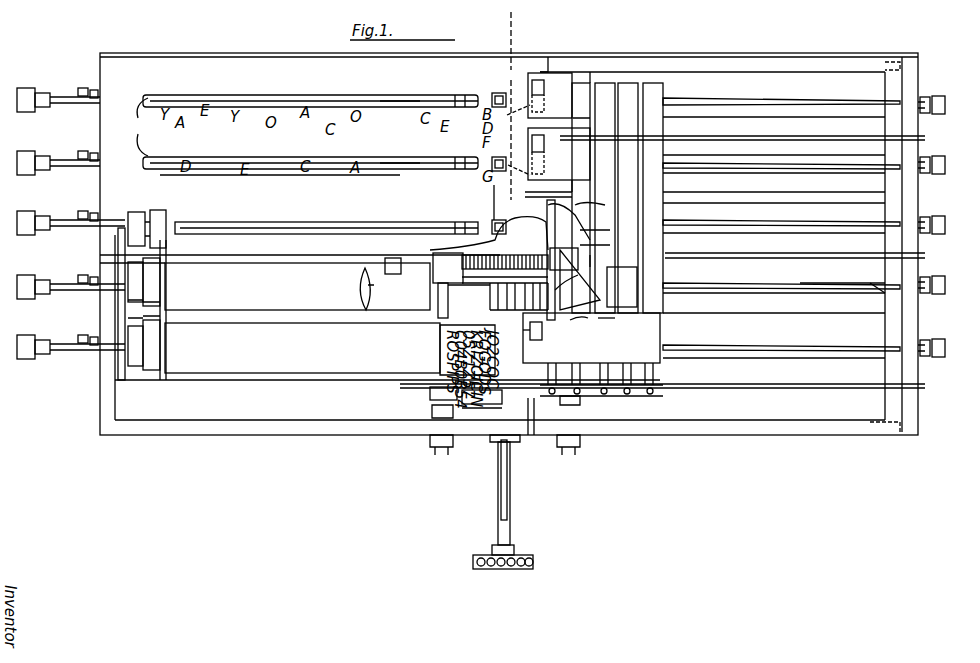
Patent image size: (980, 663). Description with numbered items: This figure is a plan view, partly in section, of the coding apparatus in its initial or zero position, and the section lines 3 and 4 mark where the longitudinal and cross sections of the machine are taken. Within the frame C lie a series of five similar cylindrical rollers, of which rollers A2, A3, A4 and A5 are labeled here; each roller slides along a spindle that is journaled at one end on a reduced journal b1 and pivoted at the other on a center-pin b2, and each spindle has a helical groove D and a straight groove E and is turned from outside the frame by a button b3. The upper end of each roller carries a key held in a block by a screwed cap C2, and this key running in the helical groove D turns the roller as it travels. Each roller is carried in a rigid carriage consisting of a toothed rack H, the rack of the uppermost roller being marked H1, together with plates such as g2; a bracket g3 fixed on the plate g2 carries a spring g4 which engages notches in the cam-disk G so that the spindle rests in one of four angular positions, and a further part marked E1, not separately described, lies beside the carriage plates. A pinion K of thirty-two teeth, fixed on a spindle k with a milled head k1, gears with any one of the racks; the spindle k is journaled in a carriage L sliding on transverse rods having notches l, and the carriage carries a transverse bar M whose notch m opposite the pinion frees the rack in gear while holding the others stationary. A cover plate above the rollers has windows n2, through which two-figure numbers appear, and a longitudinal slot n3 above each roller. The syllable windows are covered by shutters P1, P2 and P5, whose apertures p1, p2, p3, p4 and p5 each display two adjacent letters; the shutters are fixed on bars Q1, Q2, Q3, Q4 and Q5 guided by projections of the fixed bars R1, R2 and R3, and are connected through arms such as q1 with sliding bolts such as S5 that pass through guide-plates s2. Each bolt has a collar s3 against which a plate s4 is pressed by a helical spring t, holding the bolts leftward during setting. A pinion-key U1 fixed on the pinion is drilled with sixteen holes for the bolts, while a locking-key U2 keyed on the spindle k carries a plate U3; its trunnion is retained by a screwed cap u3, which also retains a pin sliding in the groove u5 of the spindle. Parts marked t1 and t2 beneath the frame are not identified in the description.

The section line 4— 4 is at (510, 299).
The button b3 is at (26, 112).
The journal b1 is at (66, 160).
The center-pin b2 is at (936, 160).
The section line 3— 3 is at (955, 290).
The channel bar H1 is at (240, 98).
The longitudinal slot n3 is at (388, 156).
The cylindrical roller A2 is at (245, 192).
The cylindrical roller A3 is at (200, 217).
The cylindrical roller A4 is at (275, 284).
The cylindrical roller A5 is at (275, 342).
The plate E1 is at (115, 355).
The spring g4 is at (110, 248).
The bracket g3 is at (128, 290).
The plate g2 is at (165, 284).
The cam-disk G is at (143, 368).
The straight groove E is at (150, 378).
The shutter aperture p1 is at (530, 92).
The shutter P1 is at (550, 95).
The shutter aperture p2 is at (540, 160).
The shutter P2 is at (559, 154).
The shutter-bar Q2 is at (559, 157).
The shutter-bar Q1 is at (492, 178).
The window n2 is at (495, 218).
The shutter-bar Q3 is at (591, 192).
The shutter-bar Q4 is at (617, 198).
The shutter-bar Q5 is at (641, 198).
The frame C is at (746, 66).
The fixed bar R3 is at (742, 129).
The fixed bar R2 is at (800, 252).
The helical groove D is at (872, 300).
The fixed bar R1 is at (800, 404).
The screwed cap C2 is at (548, 228).
The toothed pinion K is at (520, 262).
The carriage L is at (448, 267).
The pinion-key U1 is at (494, 275).
The rack H is at (372, 265).
The helical spring t is at (438, 296).
The notch m is at (562, 260).
The transverse-bar M is at (582, 280).
The sliding bolt S5 is at (566, 280).
The shutter aperture p4 is at (622, 287).
The notch l is at (602, 256).
The shutter aperture p3 is at (596, 222).
The shutter P5 is at (593, 354).
The shutter aperture p5 is at (540, 330).
The guide-plate s2 is at (548, 320).
The collar s3 is at (581, 329).
The plate s4 is at (607, 325).
The lever t1 is at (430, 406).
The lever t2 is at (580, 400).
The plate U3 is at (480, 435).
The arm q1 is at (530, 410).
The locking-key U2 is at (552, 435).
The screwed cap u3 is at (498, 470).
The groove u5 is at (502, 490).
The spindle k is at (512, 495).
The milled head k1 is at (490, 556).